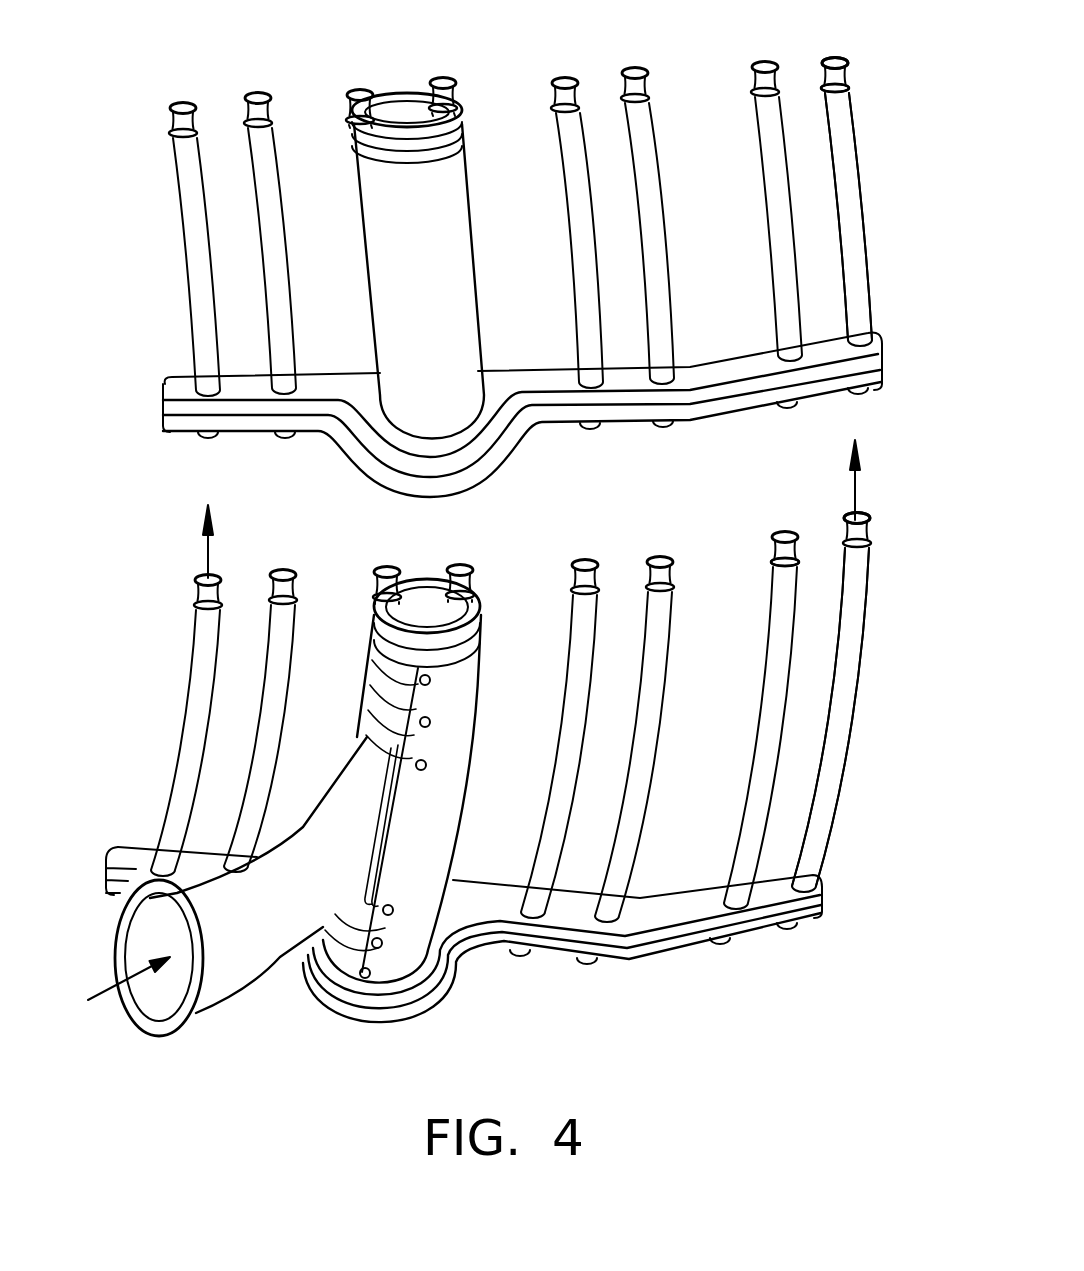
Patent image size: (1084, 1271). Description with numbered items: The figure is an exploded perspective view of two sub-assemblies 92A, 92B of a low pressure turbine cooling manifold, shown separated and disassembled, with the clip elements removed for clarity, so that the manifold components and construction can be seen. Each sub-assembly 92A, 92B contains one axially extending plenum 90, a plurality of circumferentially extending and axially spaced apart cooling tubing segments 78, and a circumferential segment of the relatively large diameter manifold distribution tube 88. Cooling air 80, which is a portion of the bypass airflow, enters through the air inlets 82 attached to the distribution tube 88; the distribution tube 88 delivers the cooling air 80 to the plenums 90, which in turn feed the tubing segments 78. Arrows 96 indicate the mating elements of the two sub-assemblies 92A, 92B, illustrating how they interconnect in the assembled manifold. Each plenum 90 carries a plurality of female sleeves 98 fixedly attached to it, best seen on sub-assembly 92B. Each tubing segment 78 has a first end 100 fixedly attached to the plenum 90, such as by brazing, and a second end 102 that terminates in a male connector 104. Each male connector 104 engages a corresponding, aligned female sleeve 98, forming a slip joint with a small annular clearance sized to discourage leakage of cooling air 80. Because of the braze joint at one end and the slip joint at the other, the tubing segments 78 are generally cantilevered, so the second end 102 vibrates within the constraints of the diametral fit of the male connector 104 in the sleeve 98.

The cooling tubing segments 78 is at (536, 462).
The cooling air 80 is at (92, 1000).
The air inlets 82 is at (223, 1004).
The manifold distribution tube 88 is at (445, 207).
The plenums 90 is at (527, 677).
The sub-assembly 92A is at (862, 758).
The sub-assembly 92B is at (876, 173).
The arrows 96 is at (853, 480).
The female sleeves 98 is at (296, 440).
The first end 100 is at (878, 346).
The second end 102 is at (833, 58).
The male connector 104 is at (849, 82).